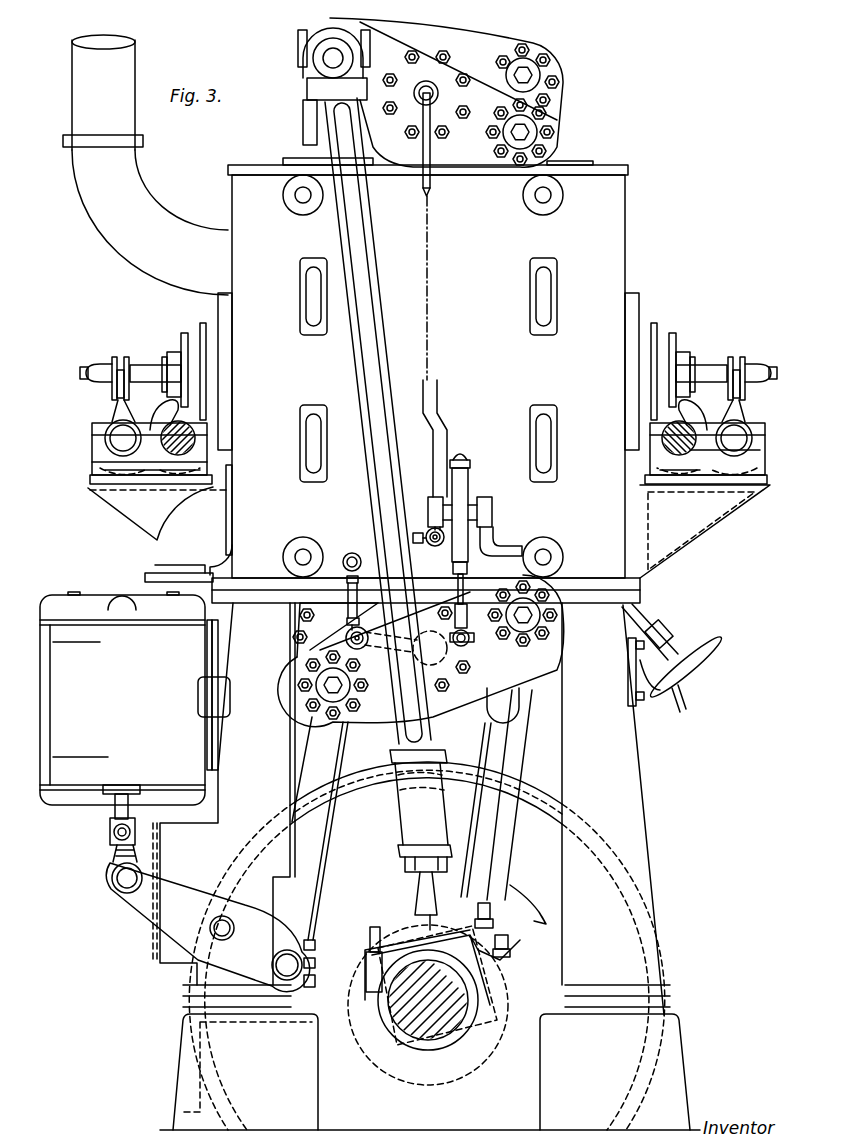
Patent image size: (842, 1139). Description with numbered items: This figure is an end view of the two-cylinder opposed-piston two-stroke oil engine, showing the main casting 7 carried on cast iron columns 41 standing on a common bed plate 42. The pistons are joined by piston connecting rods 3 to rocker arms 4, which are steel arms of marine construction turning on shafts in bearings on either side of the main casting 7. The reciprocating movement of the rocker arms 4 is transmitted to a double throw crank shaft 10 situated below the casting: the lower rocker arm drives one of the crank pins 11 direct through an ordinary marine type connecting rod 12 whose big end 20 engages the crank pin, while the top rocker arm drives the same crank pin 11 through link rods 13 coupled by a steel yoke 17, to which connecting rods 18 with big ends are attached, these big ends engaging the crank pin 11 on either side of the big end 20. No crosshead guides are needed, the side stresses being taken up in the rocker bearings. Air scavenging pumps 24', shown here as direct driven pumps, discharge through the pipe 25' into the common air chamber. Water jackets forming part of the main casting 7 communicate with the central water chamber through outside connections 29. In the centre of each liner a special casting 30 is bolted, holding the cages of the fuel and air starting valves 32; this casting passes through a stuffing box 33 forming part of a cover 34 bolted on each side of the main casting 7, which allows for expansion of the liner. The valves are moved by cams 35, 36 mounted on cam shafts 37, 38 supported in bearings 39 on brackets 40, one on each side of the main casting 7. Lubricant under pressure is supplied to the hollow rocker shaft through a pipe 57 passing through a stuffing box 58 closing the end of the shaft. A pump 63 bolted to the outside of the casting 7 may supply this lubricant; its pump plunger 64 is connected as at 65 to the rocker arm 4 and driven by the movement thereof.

The connecting rod 3 is at (355, 602).
The rocker arm 4 is at (495, 40).
The main casting 7 is at (428, 368).
The crank shaft 10 is at (428, 1005).
The crank pin 11 is at (372, 942).
The connecting rod 12 is at (412, 814).
The link rod 13 is at (365, 340).
The yoke 17 is at (412, 792).
The connecting rod 18 is at (420, 877).
The big end 20 is at (505, 951).
The air scavenging pump 24' is at (135, 727).
The pipe 25' is at (157, 566).
The outside connection 29 is at (300, 300).
The casting 30 is at (165, 358).
The air starting valve 32 is at (88, 386).
The stuffing box 33 is at (200, 345).
The cover 34 is at (218, 304).
The cam 35 is at (168, 468).
The cam 36 is at (662, 455).
The cam shaft 37 is at (160, 455).
The cam shaft 38 is at (700, 450).
The bearing 39 is at (92, 450).
The bracket 40 is at (137, 512).
The column 41 is at (411, 796).
The bed plate 42 is at (430, 1072).
The pipe 57 is at (432, 215).
The stuffing box 58 is at (438, 93).
The pump 63 is at (462, 492).
The pump plunger 64 is at (467, 574).
The connection 65 is at (466, 642).